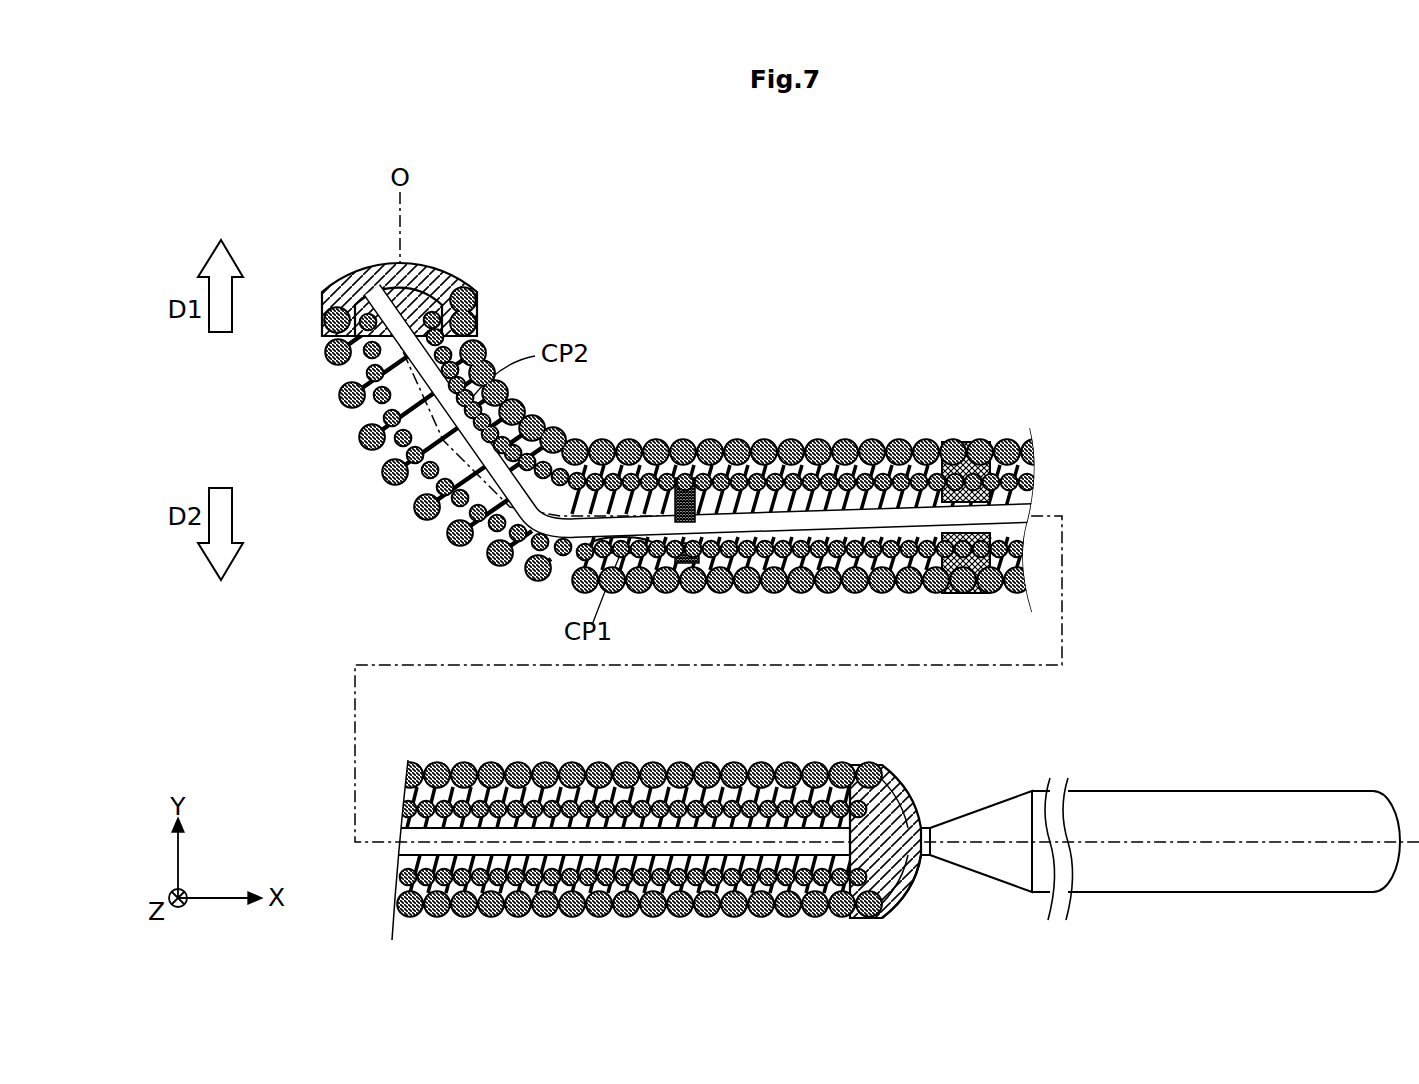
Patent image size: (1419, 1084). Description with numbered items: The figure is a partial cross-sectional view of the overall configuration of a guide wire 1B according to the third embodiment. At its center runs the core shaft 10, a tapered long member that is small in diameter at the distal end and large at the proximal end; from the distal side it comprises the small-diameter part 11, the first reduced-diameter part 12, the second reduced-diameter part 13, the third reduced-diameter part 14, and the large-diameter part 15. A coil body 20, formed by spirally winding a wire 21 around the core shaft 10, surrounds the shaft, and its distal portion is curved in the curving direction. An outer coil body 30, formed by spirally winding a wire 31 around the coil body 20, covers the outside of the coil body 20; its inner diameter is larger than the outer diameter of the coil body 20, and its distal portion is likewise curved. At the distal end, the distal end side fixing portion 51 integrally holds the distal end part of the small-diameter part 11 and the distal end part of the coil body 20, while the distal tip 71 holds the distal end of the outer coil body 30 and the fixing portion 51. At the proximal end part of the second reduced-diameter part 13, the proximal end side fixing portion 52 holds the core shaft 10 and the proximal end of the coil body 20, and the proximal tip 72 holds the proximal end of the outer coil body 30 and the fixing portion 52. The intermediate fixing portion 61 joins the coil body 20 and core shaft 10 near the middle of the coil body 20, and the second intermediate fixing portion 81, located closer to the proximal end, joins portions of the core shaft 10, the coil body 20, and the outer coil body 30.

The guide wire 1B is at (162, 212).
The core shaft 10 is at (900, 508).
The small-diameter part 11 is at (378, 352).
The first reduced-diameter part 12 is at (600, 525).
The second reduced-diameter part 13 is at (932, 450).
The third reduced-diameter part 14 is at (975, 805).
The large-diameter part 15 is at (1160, 800).
The coil body 20 is at (792, 478).
The wire 21 is at (822, 458).
The outer coil body 30 is at (683, 446).
The wire 31 is at (705, 460).
The distal end side fixing portion 51 is at (372, 282).
The proximal end side fixing portion 52 is at (912, 868).
The intermediate fixing portion 61 is at (688, 565).
The distal tip 71 is at (432, 268).
The proximal tip 72 is at (880, 780).
The second intermediate fixing portion 81 is at (958, 598).